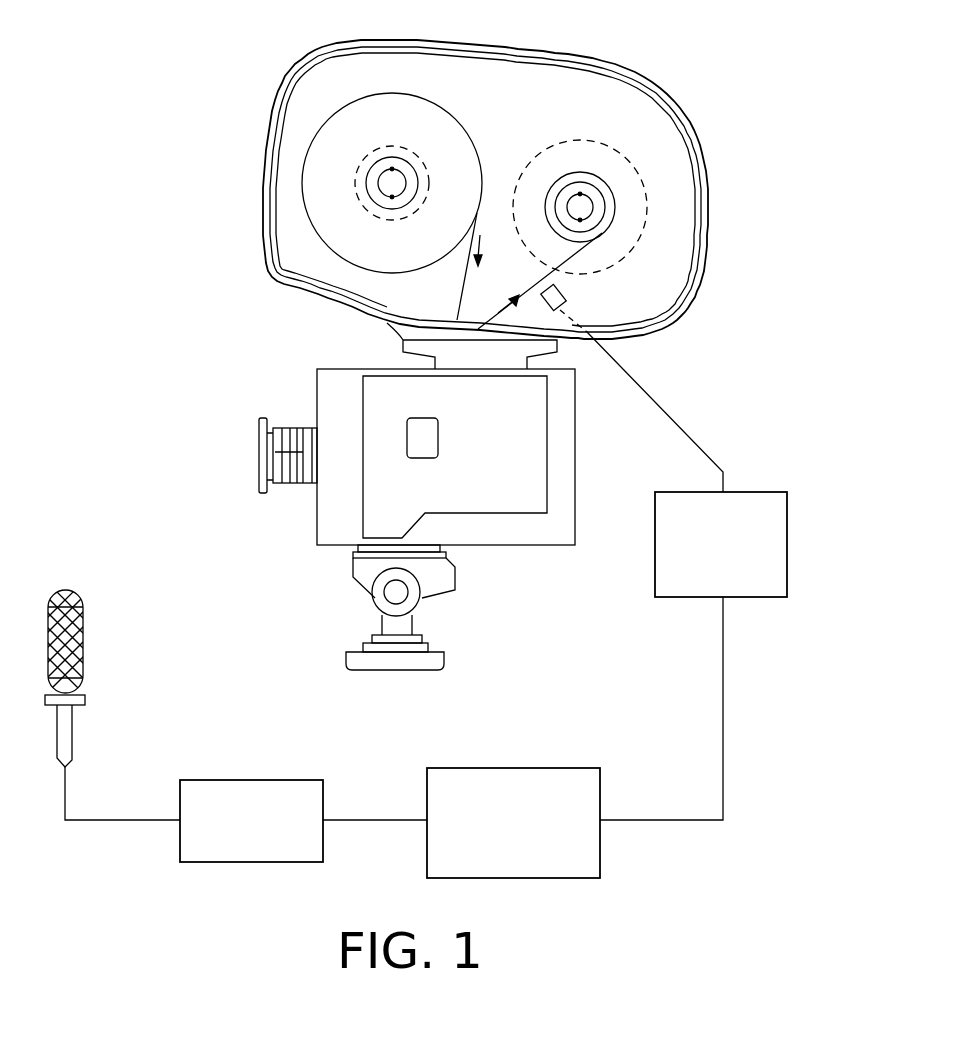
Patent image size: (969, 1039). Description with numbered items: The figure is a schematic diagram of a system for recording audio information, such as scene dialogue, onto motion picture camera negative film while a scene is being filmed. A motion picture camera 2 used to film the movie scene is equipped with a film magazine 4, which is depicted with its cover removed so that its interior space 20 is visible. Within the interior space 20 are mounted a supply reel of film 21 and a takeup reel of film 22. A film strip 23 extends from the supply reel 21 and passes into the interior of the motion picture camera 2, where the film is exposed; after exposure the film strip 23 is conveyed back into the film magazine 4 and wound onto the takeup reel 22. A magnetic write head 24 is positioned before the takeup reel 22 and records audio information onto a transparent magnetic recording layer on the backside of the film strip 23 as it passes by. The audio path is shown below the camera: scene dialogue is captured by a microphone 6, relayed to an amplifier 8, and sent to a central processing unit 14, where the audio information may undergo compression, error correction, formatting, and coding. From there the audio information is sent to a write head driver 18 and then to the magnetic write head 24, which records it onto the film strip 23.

The motion picture camera 2 is at (532, 545).
The film magazine 4 is at (702, 148).
The microphone 6 is at (83, 645).
The amplifier 8 is at (262, 780).
The central processing unit 14 is at (535, 768).
The write head driver 18 is at (757, 492).
The interior space 20 is at (633, 98).
The supply reel of film 21 is at (447, 110).
The takeup reel of film 22 is at (608, 190).
The film strip 23 is at (458, 293).
The magnetic write head 24 is at (562, 288).